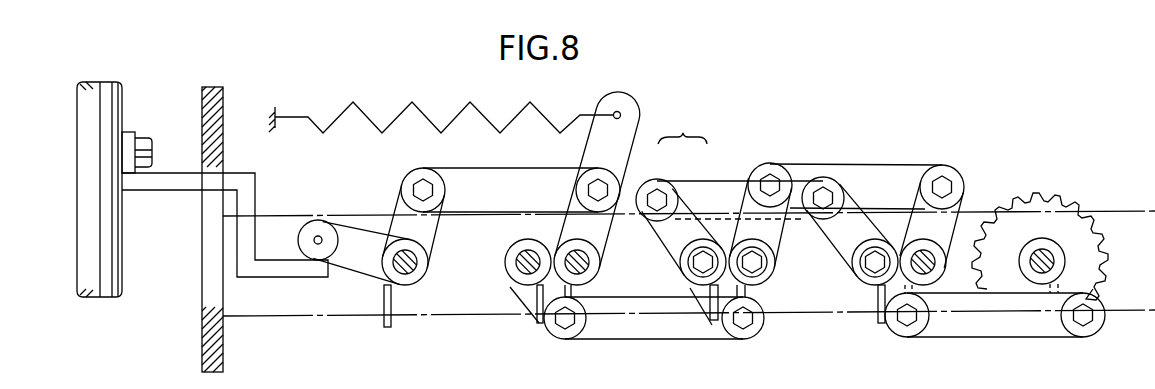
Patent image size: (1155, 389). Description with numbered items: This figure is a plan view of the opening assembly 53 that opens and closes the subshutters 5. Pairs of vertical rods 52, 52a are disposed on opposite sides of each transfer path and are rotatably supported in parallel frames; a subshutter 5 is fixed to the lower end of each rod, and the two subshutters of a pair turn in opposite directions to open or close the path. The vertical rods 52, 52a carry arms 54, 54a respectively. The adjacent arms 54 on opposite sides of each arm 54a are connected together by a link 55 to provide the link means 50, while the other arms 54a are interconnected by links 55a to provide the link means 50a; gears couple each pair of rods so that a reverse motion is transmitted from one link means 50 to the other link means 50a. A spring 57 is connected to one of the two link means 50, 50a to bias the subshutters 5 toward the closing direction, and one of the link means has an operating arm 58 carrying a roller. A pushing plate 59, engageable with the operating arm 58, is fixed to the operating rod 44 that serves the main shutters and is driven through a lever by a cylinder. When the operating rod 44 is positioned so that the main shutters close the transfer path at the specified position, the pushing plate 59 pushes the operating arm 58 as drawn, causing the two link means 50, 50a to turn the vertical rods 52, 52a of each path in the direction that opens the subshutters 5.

The operating rod 44 is at (122, 254).
The pushing plate 59 is at (300, 268).
The spring 57 is at (497, 128).
The operating arm 58 is at (350, 237).
The link 55 is at (480, 180).
The link 55a is at (713, 198).
The arm 54 is at (597, 140).
The arm 54a is at (661, 240).
The vertical rod 52 is at (422, 268).
The vertical rod 52a is at (517, 268).
The subshutter 5 is at (391, 310).
The assembly 53 is at (682, 130).
The link means 50 is at (640, 178).
The link means 50a is at (700, 168).